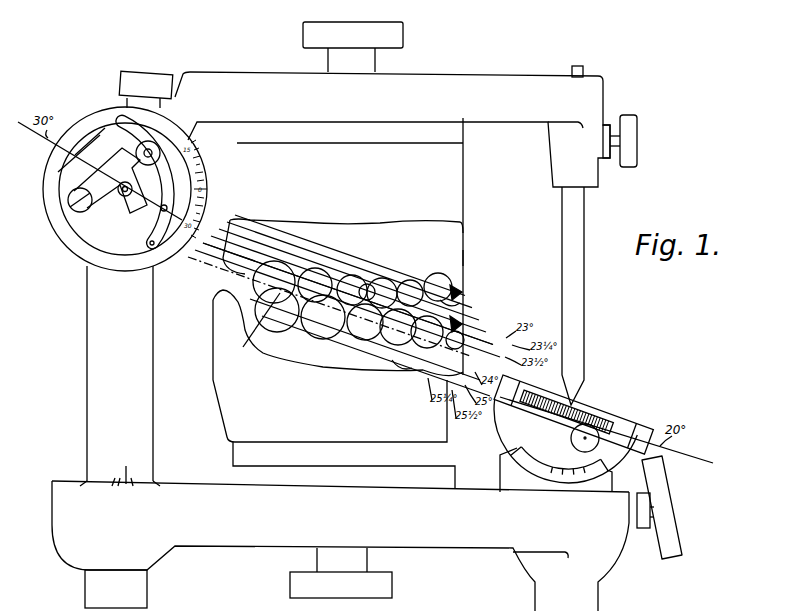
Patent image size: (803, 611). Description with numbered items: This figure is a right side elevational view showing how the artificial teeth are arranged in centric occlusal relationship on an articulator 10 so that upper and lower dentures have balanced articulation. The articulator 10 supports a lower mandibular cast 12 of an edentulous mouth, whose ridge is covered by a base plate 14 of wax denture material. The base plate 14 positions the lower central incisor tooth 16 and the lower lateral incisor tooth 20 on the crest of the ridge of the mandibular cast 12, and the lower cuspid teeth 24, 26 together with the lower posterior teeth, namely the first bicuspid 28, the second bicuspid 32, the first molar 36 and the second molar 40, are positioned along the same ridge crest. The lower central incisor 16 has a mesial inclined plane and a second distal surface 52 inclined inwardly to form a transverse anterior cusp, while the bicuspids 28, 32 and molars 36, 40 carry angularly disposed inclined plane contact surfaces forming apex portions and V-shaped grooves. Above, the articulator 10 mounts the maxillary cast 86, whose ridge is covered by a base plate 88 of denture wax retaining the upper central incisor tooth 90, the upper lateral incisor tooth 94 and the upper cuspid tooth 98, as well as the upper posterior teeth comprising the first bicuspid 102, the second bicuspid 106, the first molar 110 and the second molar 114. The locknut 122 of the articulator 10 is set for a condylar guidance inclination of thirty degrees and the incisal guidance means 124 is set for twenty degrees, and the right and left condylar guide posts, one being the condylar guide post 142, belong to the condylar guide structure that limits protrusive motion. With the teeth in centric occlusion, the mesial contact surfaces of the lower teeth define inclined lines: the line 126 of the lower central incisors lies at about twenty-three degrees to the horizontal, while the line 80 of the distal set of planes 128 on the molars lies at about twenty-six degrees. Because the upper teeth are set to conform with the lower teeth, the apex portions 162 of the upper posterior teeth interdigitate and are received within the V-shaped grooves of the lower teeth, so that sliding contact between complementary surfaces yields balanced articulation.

The articulator 10 is at (52, 531).
The lower mandibular cast 12 is at (226, 420).
The base plate 14 is at (237, 308).
The lower central incisor tooth 16 is at (452, 322).
The lower lateral incisor tooth 20 is at (466, 338).
The lower cuspid tooth 24 is at (420, 380).
The lower cuspid tooth 26 is at (402, 372).
The first bicuspid 28 is at (388, 343).
The second bicuspid 32 is at (364, 333).
The first molar 36 is at (322, 333).
The second molar 40 is at (280, 312).
The second distal surface 52 is at (545, 273).
The mesial inclined plane contact surface of the distal set 80 is at (396, 368).
The maxillary cast 86 is at (465, 216).
The base plate 88 is at (465, 263).
The upper central incisor tooth 90 is at (458, 298).
The upper lateral incisor tooth 94 is at (440, 273).
The upper cuspid tooth 98 is at (408, 278).
The upper first bicuspid 102 is at (393, 282).
The upper second bicuspid 106 is at (375, 278).
The upper first molar 110 is at (322, 280).
The upper second molar 114 is at (280, 268).
The locknut 122 is at (120, 82).
The incisal guidance means 124 is at (593, 414).
The line of the lower central incisor teeth 126 is at (497, 330).
The distal set of planes 128 is at (252, 296).
The condylar guide post 142 is at (87, 294).
The apex portions 162 is at (355, 278).